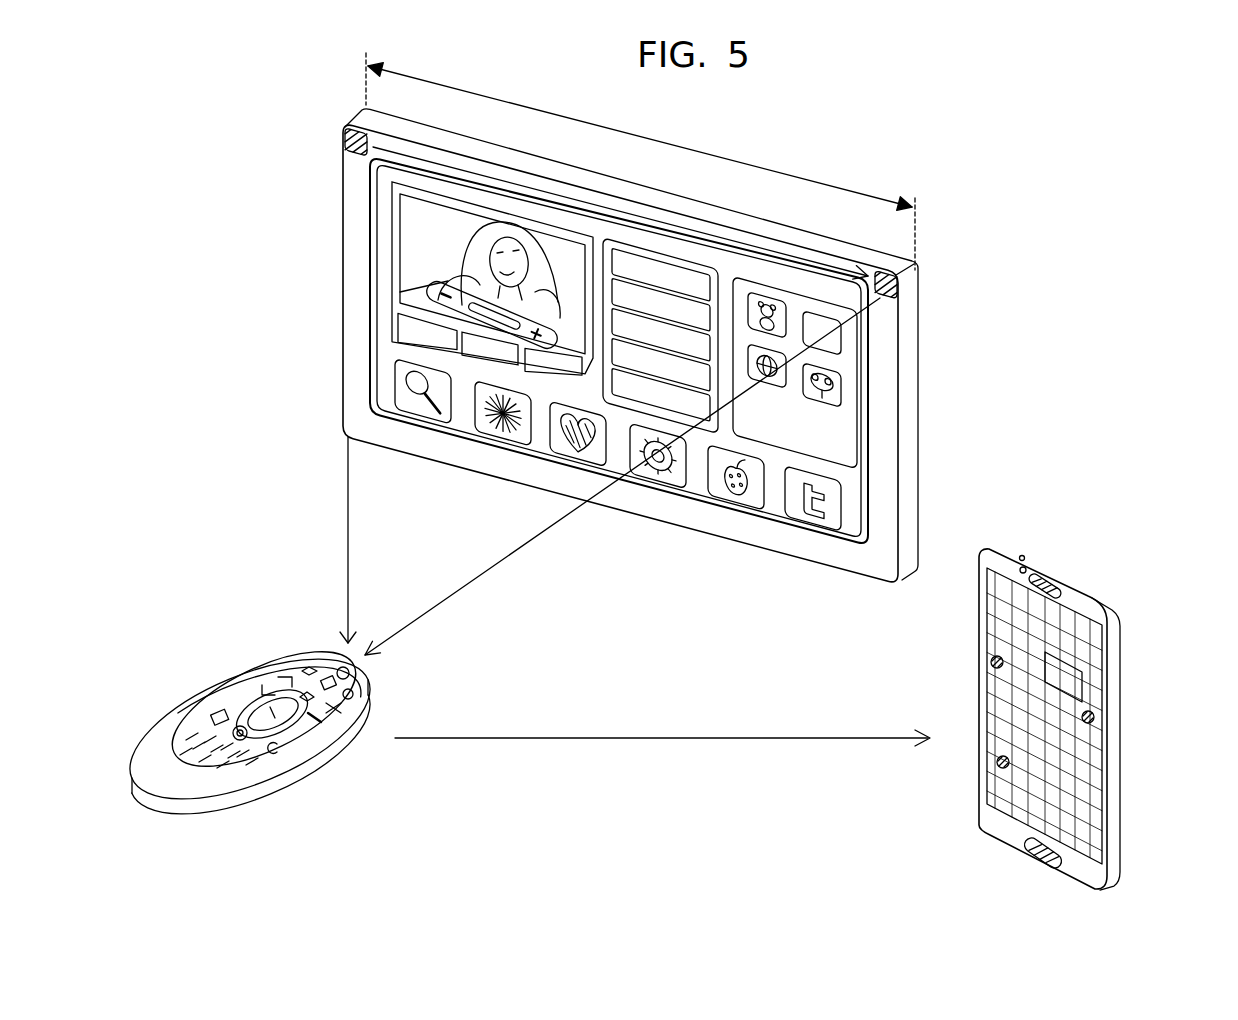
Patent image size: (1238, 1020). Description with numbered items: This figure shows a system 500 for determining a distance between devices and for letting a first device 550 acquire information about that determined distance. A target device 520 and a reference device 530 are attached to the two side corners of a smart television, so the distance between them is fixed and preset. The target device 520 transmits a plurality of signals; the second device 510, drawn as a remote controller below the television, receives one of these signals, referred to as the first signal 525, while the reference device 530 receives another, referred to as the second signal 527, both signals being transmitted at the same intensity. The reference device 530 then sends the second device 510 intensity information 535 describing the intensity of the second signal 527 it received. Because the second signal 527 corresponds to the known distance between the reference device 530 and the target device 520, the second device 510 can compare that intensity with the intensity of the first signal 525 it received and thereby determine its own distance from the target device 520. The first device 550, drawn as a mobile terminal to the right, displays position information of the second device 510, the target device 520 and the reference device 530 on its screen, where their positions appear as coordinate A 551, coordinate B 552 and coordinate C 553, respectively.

The display system 500 is at (1037, 166).
The second device 510 is at (230, 705).
The target device 520 is at (343, 138).
The first signal 525 is at (348, 505).
The second signal 527 is at (690, 229).
The reference device 530 is at (899, 288).
The intensity information 535 is at (512, 553).
The first device 550 is at (1051, 712).
The coordinate A 551 is at (1000, 758).
The coordinate B 552 is at (995, 660).
The coordinate C 553 is at (1094, 717).